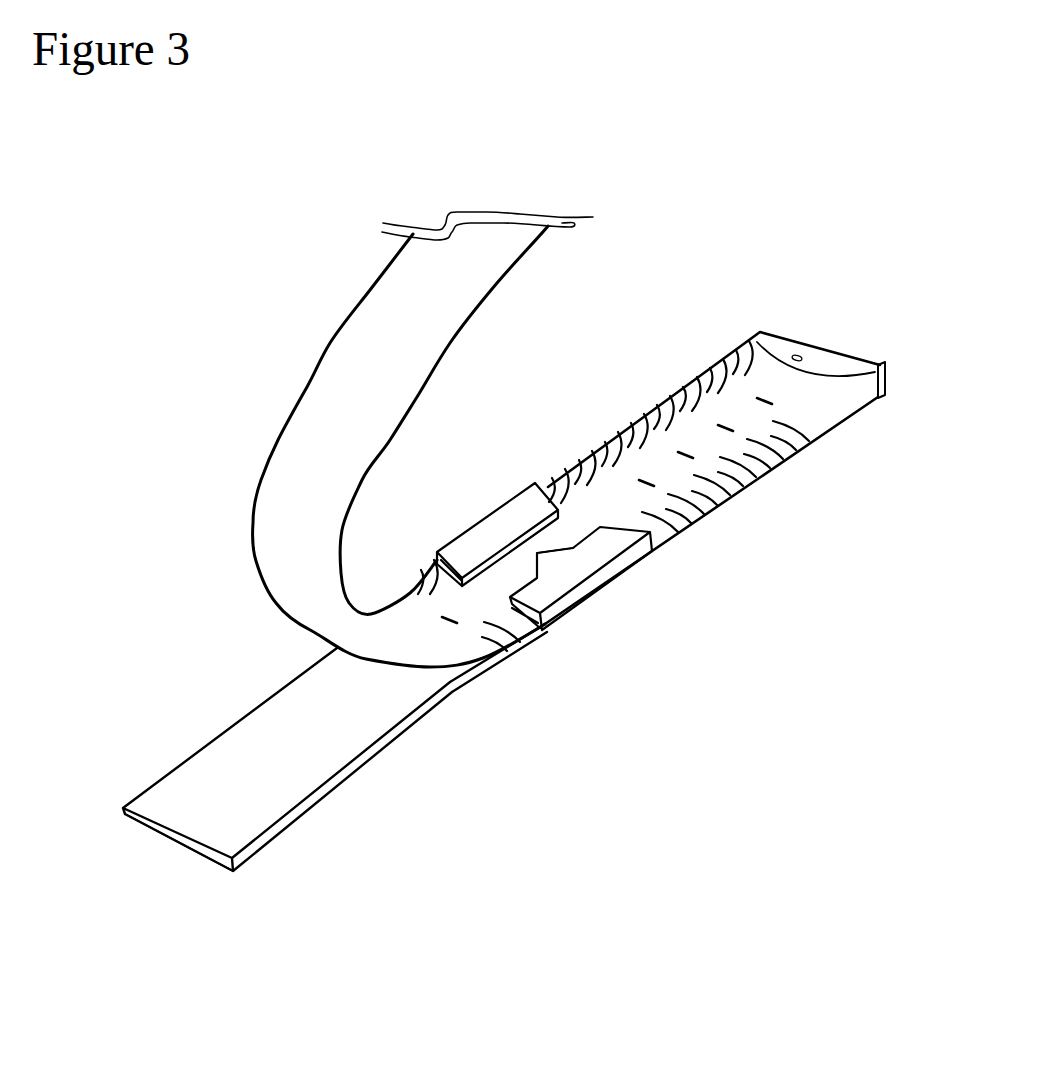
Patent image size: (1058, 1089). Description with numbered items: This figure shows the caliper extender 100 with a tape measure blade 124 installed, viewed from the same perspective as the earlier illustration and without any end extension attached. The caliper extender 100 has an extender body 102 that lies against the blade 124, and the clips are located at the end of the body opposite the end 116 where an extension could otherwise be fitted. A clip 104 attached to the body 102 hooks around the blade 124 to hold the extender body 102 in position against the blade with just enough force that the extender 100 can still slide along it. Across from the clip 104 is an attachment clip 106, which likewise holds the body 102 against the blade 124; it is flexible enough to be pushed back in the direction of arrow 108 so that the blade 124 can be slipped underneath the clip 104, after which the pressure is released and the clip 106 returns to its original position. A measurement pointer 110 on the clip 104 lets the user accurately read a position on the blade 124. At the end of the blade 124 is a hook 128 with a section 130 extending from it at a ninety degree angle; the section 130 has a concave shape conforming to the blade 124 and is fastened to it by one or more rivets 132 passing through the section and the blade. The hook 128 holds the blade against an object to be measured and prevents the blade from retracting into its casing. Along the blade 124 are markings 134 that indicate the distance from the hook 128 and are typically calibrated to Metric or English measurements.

The caliper extender 100 is at (534, 706).
The extender body 102 is at (296, 766).
The clip 104 is at (607, 543).
The attachment clip 106 is at (497, 522).
The arrow 108 is at (467, 502).
The measurement pointer 110 is at (548, 555).
The end 116 is at (177, 837).
The tape measure blade 124 is at (718, 482).
The hook 128 is at (884, 380).
The section 130 is at (777, 348).
The rivets 132 is at (797, 354).
The markings 134 is at (683, 392).